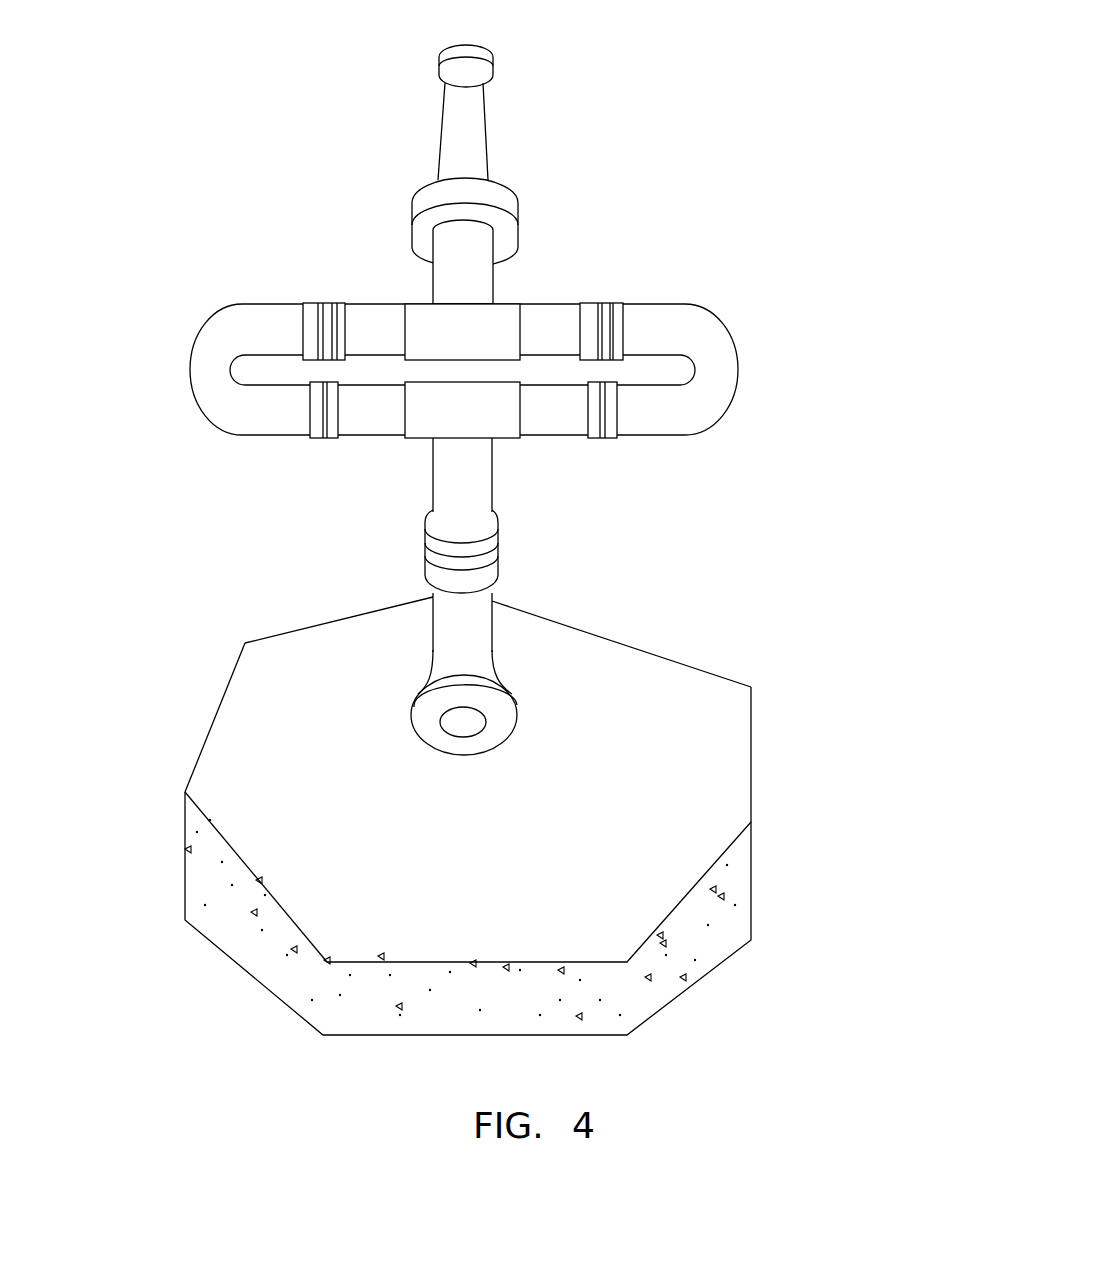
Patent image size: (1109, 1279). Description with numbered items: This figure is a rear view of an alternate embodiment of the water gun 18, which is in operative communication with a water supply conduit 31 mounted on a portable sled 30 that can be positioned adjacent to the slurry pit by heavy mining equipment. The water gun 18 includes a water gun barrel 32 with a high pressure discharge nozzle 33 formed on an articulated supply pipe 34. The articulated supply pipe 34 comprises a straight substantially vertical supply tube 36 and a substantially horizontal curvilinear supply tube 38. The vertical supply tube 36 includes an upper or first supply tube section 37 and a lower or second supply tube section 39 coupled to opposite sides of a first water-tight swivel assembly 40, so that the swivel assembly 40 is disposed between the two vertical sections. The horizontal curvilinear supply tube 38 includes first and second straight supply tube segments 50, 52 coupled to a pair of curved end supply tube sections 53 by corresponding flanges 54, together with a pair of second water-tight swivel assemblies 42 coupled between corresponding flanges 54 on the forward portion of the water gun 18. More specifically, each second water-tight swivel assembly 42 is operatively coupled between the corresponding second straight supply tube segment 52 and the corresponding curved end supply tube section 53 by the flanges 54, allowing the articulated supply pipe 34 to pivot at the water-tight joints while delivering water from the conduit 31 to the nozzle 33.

The water gun 18 is at (172, 260).
The portable sled 30 is at (563, 816).
The water supply conduit 31 is at (502, 728).
The water gun barrel 32 is at (487, 133).
The high pressure discharge nozzle 33 is at (493, 58).
The articulated supply pipe 34 is at (180, 630).
The straight substantially vertical supply tube 36 is at (348, 628).
The upper or first supply tube section 37 is at (440, 472).
The substantially horizontal curvilinear supply tube 38 is at (697, 300).
The lower or second supply tube section 39 is at (491, 625).
The first water-tight swivel assembly 40 is at (594, 628).
The second water-tight swivel assembly 42 is at (483, 332).
The first straight supply tube segment 50 is at (388, 428).
The second straight supply tube segment 52 is at (368, 303).
The curved end supply tube section 53 is at (223, 403).
The flange 54 is at (305, 302).